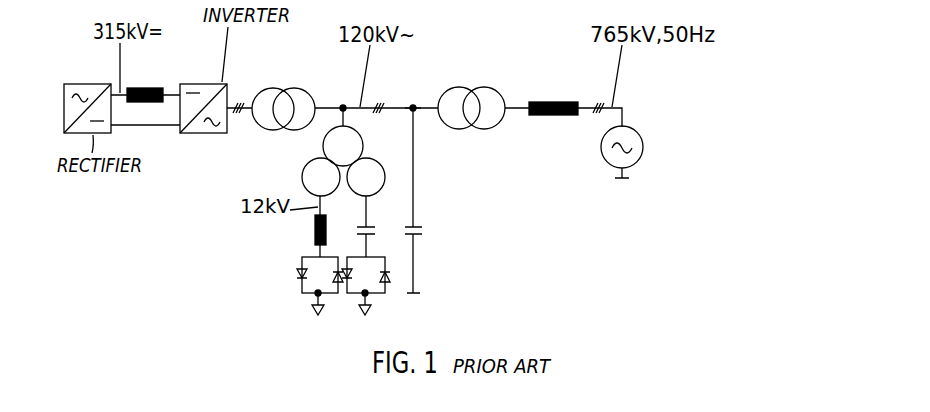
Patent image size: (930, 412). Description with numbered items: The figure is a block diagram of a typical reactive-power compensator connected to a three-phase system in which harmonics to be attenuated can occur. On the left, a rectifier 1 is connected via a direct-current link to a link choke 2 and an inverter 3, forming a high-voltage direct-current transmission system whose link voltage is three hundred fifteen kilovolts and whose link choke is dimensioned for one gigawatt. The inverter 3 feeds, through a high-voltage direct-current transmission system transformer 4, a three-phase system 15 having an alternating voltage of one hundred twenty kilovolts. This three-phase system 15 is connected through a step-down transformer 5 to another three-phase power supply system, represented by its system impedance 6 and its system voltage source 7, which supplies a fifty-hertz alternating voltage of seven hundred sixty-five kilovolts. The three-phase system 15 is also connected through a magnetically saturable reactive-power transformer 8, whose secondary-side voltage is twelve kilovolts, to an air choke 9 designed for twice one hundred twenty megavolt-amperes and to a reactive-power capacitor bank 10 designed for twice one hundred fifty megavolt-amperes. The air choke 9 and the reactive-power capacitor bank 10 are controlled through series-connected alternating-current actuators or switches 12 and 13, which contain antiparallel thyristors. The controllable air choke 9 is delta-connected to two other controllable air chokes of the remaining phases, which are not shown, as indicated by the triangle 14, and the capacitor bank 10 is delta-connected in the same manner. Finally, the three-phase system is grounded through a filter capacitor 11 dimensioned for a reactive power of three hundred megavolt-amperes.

The rectifier 1 is at (83, 83).
The link choke 2 is at (139, 87).
The inverter 3 is at (203, 83).
The high-voltage direct-current transmission system transformer 4 is at (273, 88).
The step-down transformer 5 is at (467, 87).
The system impedance 6 is at (547, 102).
The system voltage source 7 is at (643, 143).
The reactive-power transformer 8 is at (288, 169).
The air choke 9 is at (315, 227).
The reactive-power capacitor bank 10 is at (368, 225).
The filter capacitor 11 is at (417, 227).
The alternating-current actuator 12 is at (317, 283).
The alternating-current actuator 13 is at (373, 295).
The triangle 14 is at (363, 315).
The three-phase system 15 is at (425, 106).